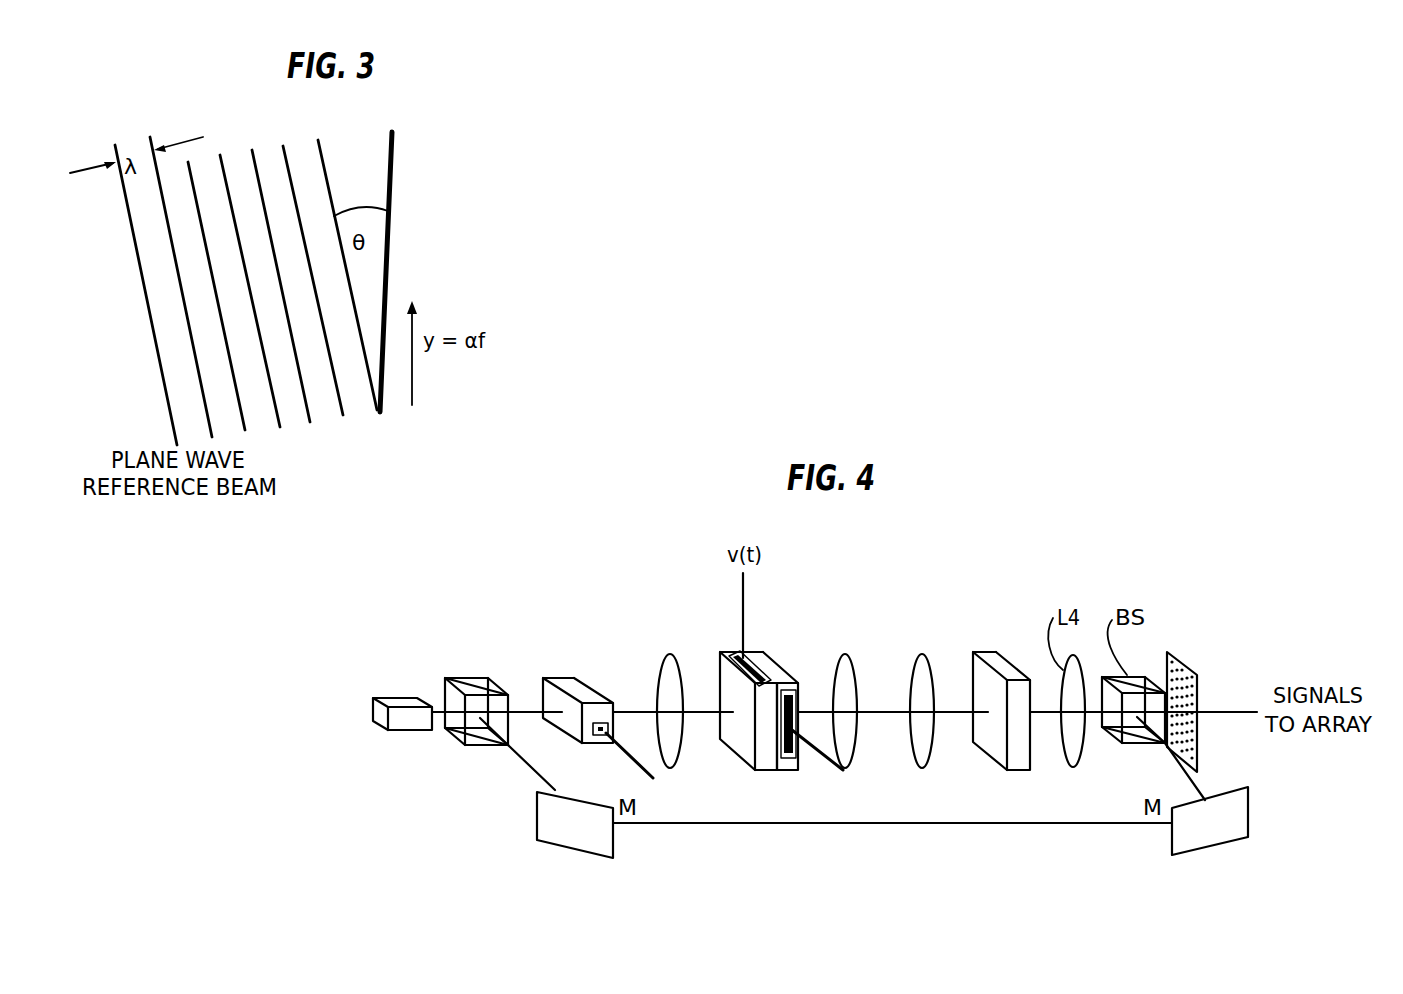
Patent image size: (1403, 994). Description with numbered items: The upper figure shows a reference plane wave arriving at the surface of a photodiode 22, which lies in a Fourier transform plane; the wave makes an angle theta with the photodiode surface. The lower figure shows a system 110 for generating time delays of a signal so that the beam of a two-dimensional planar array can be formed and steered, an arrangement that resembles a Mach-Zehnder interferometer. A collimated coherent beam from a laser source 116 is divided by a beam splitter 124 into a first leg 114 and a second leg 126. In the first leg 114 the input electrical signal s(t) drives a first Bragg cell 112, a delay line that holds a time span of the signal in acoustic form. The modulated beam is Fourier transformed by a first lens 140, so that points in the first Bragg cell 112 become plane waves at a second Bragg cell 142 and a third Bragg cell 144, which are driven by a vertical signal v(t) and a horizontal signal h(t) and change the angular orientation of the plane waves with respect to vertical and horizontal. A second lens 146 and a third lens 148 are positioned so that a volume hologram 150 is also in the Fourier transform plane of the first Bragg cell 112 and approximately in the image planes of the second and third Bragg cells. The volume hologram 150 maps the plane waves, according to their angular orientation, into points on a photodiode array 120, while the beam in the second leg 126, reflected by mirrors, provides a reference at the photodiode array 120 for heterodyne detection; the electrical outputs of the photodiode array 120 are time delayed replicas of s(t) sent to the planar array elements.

In FIG. 3, the photodiode 22 is at (406, 160).
In FIG. 4, the system 110 is at (551, 548).
In FIG. 4, the first Bragg cell 112 is at (577, 680).
In FIG. 4, the first leg 114 is at (518, 705).
In FIG. 4, the laser source 116 is at (392, 697).
In FIG. 4, the photodiode array 120 is at (1183, 663).
In FIG. 4, the beam splitter 124 is at (472, 677).
In FIG. 4, the second leg 126 is at (517, 755).
In FIG. 4, the first lens 140 is at (662, 667).
In FIG. 4, the second Bragg cell 142 is at (723, 668).
In FIG. 4, the third Bragg cell 144 is at (780, 663).
In FIG. 4, the second lens 146 is at (848, 657).
In FIG. 4, the third lens 148 is at (930, 657).
In FIG. 4, the volume hologram 150 is at (1005, 657).